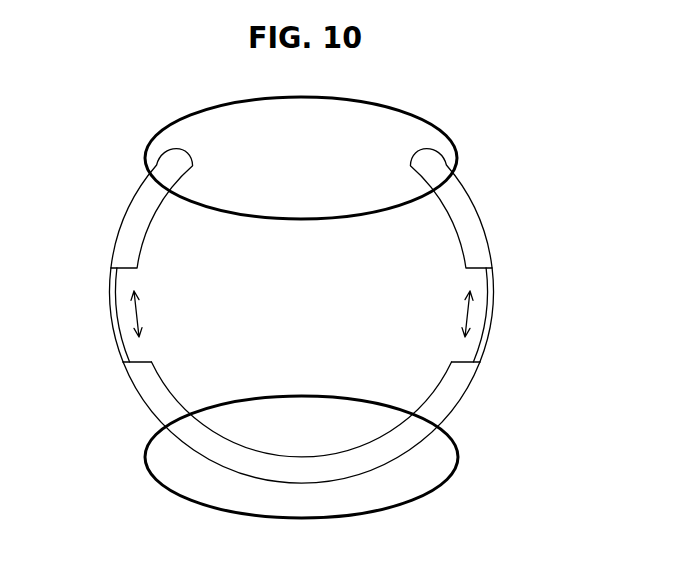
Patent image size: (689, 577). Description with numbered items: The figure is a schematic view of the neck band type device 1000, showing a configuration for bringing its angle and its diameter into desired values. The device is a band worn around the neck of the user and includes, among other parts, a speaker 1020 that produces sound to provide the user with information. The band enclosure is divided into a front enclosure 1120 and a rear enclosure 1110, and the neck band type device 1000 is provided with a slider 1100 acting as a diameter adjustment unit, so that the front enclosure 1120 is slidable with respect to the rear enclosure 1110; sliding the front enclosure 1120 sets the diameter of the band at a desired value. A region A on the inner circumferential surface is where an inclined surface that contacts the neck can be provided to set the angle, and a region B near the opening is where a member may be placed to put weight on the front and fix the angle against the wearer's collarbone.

The neck band type device 1000 is at (323, 316).
The slider 1100 is at (498, 287).
The rear enclosure 1110 is at (447, 407).
The front enclosure 1120 is at (462, 198).
The speaker 1020 is at (140, 203).
The region A is at (457, 456).
The region B is at (459, 158).